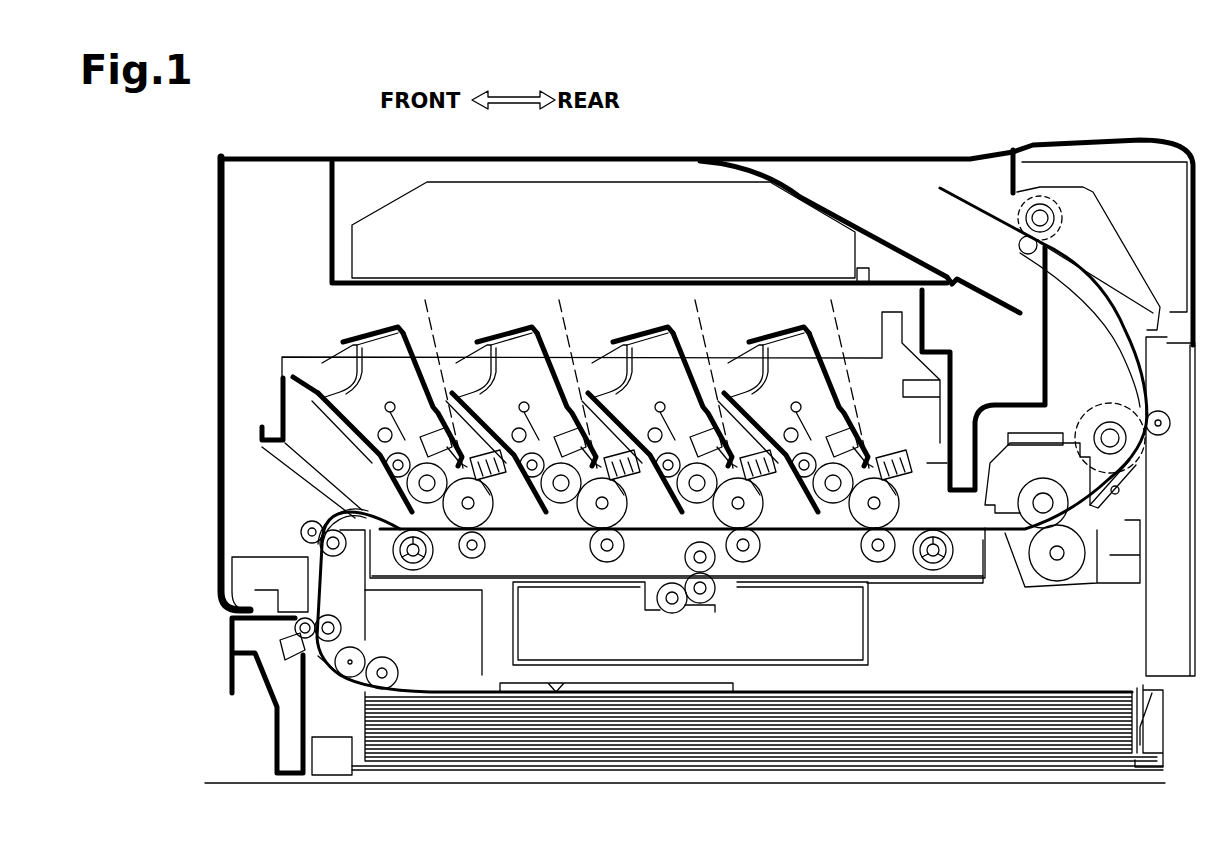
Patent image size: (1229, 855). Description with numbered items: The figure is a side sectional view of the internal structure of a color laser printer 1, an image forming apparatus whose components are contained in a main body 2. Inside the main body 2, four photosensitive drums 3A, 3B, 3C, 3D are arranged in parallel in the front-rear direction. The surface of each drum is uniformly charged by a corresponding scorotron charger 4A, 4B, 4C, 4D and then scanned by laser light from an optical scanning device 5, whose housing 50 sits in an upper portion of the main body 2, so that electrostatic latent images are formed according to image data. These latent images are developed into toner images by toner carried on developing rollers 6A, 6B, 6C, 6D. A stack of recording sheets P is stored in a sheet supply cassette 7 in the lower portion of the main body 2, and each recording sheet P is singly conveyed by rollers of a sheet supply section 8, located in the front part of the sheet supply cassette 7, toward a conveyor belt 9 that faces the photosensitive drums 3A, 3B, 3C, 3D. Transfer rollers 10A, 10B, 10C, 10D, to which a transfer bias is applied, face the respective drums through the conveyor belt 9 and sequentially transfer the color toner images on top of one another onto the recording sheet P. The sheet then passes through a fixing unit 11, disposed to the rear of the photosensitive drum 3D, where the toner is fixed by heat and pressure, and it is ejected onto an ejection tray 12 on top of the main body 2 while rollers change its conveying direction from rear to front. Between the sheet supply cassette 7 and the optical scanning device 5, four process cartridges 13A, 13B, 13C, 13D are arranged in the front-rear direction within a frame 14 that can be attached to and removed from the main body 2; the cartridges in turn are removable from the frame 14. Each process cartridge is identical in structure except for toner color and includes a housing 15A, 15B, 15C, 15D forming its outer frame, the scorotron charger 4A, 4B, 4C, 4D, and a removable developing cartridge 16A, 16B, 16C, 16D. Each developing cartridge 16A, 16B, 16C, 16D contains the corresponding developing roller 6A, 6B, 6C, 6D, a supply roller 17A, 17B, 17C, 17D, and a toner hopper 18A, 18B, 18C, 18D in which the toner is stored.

The color laser printer 1 is at (784, 98).
The main body 2 is at (835, 157).
The photosensitive drum 3A is at (460, 528).
The photosensitive drum 3B is at (594, 523).
The photosensitive drum 3C is at (711, 515).
The photosensitive drum 3D is at (859, 515).
The scorotron charger 4A is at (485, 457).
The scorotron charger 4B is at (597, 460).
The scorotron charger 4C is at (733, 460).
The scorotron charger 4D is at (869, 460).
The optical scanning device 5 is at (595, 182).
The housing 50 is at (617, 182).
The developing roller 6A is at (426, 463).
The developing roller 6B is at (550, 448).
The developing roller 6C is at (686, 448).
The developing roller 6D is at (822, 448).
The sheet supply cassette 7 is at (228, 625).
The sheet supply section 8 is at (433, 650).
The conveyor belt 9 is at (760, 578).
The transfer roller 10A is at (485, 548).
The transfer roller 10B is at (636, 550).
The transfer roller 10C is at (771, 550).
The transfer roller 10D is at (860, 550).
The fixing unit 11 is at (1054, 608).
The ejection tray 12 is at (868, 222).
The process cartridge 13A is at (409, 429).
The process cartridge 13B is at (543, 428).
The process cartridge 13C is at (679, 419).
The process cartridge 13D is at (815, 419).
The frame 14 is at (278, 368).
The housing 15A is at (438, 410).
The housing 15B is at (561, 399).
The housing 15C is at (697, 399).
The housing 15D is at (853, 399).
The developing cartridge 16A is at (388, 326).
The developing cartridge 16B is at (496, 403).
The developing cartridge 16C is at (632, 403).
The developing cartridge 16D is at (768, 403).
The supply roller 17A is at (384, 429).
The supply roller 17B is at (508, 418).
The supply roller 17C is at (644, 418).
The supply roller 17D is at (780, 418).
The toner hopper 18A is at (398, 330).
The toner hopper 18B is at (525, 316).
The toner hopper 18C is at (661, 316).
The toner hopper 18D is at (798, 316).
The recording sheet P is at (925, 692).